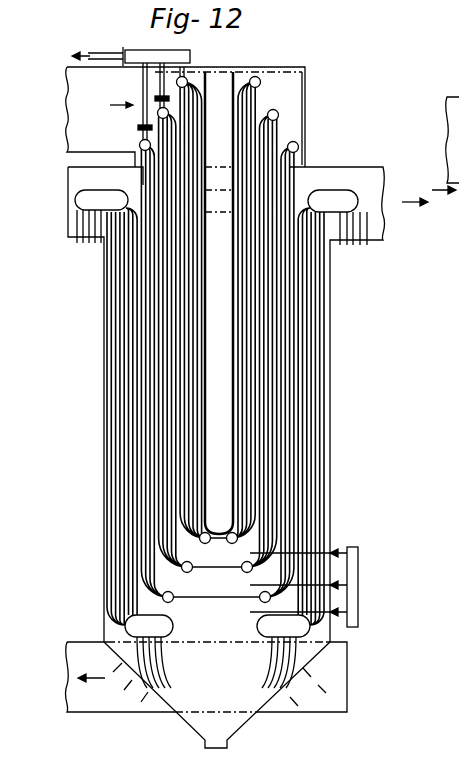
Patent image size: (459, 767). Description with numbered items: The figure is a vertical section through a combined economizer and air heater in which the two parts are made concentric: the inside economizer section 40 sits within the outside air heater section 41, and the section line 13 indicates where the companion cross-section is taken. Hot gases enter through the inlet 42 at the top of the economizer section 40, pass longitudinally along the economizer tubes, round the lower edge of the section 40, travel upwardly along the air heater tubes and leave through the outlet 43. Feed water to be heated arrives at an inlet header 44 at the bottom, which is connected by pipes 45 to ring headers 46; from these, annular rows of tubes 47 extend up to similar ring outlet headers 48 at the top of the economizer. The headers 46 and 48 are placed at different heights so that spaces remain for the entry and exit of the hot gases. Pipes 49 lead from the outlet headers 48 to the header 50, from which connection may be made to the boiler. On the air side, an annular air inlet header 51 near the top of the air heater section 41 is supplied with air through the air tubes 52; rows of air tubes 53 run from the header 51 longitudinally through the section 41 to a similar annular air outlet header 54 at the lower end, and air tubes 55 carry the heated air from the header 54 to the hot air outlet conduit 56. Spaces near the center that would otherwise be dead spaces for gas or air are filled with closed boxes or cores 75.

The header 13 is at (67, 171).
The inside economizer section 40 is at (160, 390).
The outside air heater section 41 is at (104, 350).
The inlet 42 is at (185, 117).
The outlet 43 is at (383, 224).
The inlet header 44 is at (358, 600).
The pipes 45 is at (340, 548).
The ring headers 46 is at (218, 545).
The tubes 47 is at (255, 385).
The ring outlet headers 48 is at (297, 142).
The pipes 49 is at (145, 97).
The header 50 is at (156, 45).
The annular air inlet header 51 is at (312, 200).
The air tubes 52 is at (97, 242).
The air tubes 53 is at (305, 505).
The annular air outlet header 54 is at (268, 637).
The air tubes 55 is at (194, 685).
The hot air outlet conduit 56 is at (108, 703).
The closed boxes or cores 75 is at (217, 100).